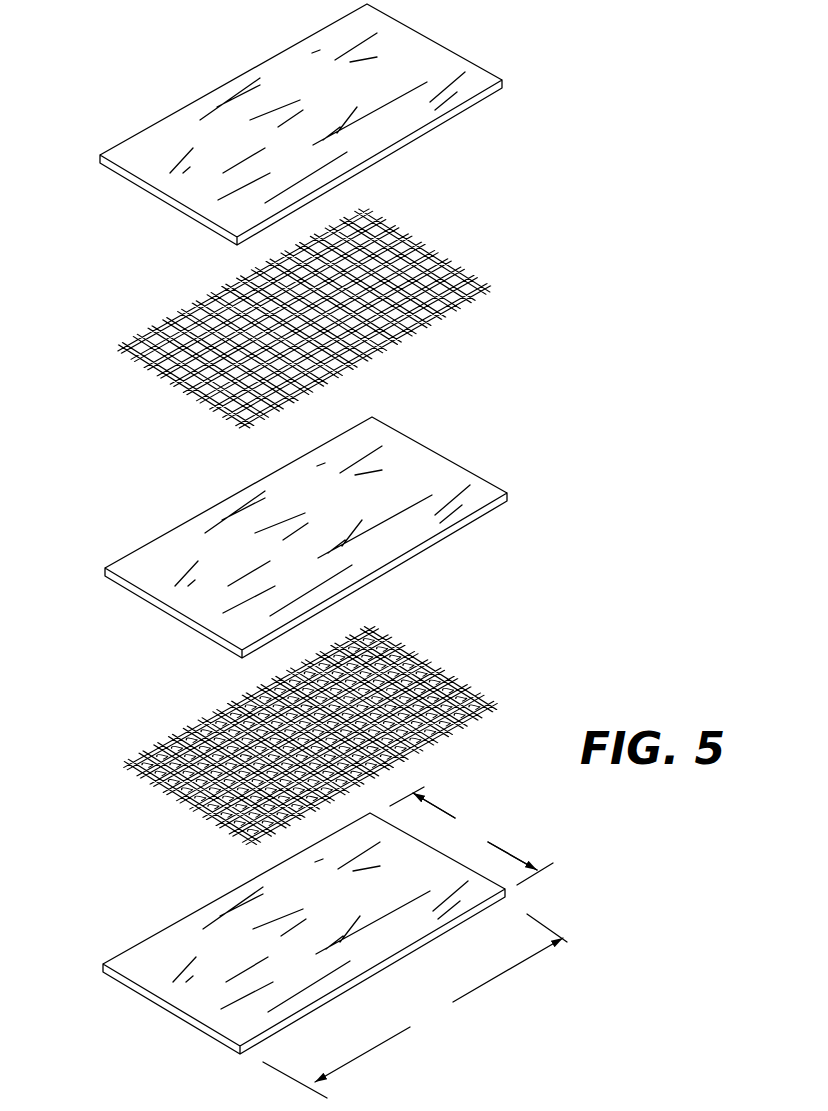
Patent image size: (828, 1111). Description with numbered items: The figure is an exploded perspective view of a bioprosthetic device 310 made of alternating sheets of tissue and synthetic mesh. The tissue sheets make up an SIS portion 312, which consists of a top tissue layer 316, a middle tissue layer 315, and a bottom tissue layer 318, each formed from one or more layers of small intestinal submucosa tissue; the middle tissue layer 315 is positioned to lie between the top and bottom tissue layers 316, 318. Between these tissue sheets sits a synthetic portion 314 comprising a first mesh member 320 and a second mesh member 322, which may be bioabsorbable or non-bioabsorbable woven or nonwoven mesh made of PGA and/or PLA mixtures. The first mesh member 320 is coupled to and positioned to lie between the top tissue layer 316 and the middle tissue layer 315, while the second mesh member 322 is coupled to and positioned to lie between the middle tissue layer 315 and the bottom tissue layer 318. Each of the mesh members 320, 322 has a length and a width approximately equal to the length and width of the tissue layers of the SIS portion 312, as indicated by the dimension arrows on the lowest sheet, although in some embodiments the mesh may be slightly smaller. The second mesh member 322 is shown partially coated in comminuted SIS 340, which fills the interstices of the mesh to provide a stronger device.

The bioprosthetic device 310 is at (70, 1002).
The SIS portion 312 is at (513, 65).
The synthetic portion 314 is at (482, 238).
The middle tissue layer 315 is at (178, 540).
The top tissue layer 316 is at (198, 107).
The bottom tissue layer 318 is at (160, 1002).
The first mesh member 320 is at (187, 318).
The second mesh member 322 is at (310, 728).
The comminuted SIS 340 is at (188, 737).